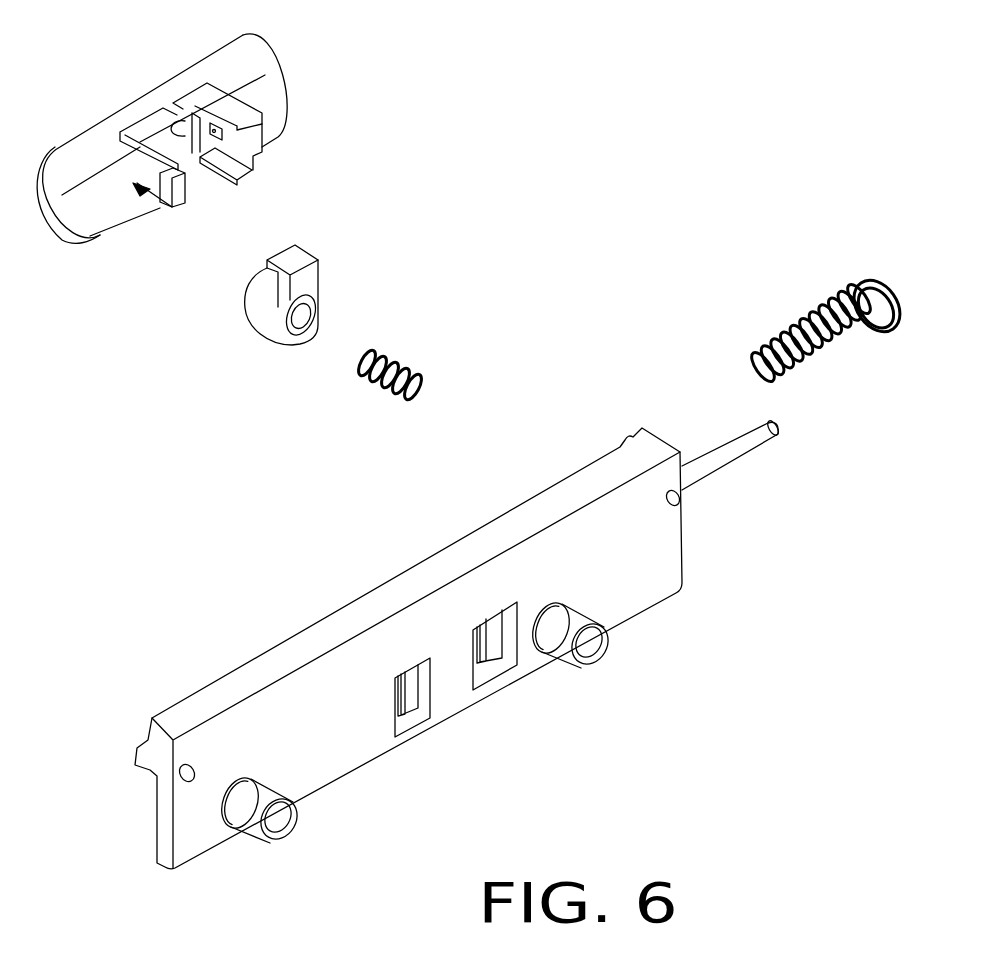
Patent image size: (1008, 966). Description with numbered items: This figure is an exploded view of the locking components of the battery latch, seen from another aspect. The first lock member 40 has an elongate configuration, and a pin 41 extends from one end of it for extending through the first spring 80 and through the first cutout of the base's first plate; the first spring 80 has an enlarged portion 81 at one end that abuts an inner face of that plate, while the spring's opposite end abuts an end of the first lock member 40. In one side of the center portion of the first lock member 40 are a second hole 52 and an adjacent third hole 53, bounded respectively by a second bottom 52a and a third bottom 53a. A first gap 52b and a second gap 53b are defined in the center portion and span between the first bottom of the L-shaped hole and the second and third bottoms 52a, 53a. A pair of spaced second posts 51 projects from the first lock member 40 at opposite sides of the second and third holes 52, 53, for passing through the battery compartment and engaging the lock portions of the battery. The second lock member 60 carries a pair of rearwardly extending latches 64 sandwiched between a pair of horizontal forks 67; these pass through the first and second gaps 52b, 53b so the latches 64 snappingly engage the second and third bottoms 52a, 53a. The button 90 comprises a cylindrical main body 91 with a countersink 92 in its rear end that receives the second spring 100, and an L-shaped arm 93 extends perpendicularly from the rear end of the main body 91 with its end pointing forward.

The first lock member 40 is at (547, 478).
The pin 41 is at (738, 452).
The second posts 51 is at (280, 820).
The second hole 52 is at (332, 698).
The second bottom 52a is at (395, 681).
The first gap 52b is at (405, 677).
The third hole 53 is at (503, 668).
The third bottom 53a is at (495, 625).
The second gap 53b is at (473, 630).
The second lock member 60 is at (287, 53).
The latches 64 is at (145, 167).
The forks 67 is at (210, 95).
The first spring 80 is at (810, 331).
The enlarged portion 81 is at (877, 331).
The button 90 is at (317, 297).
The main body 91 is at (263, 298).
The countersink 92 is at (302, 317).
The arm 93 is at (297, 262).
The second spring 100 is at (400, 365).